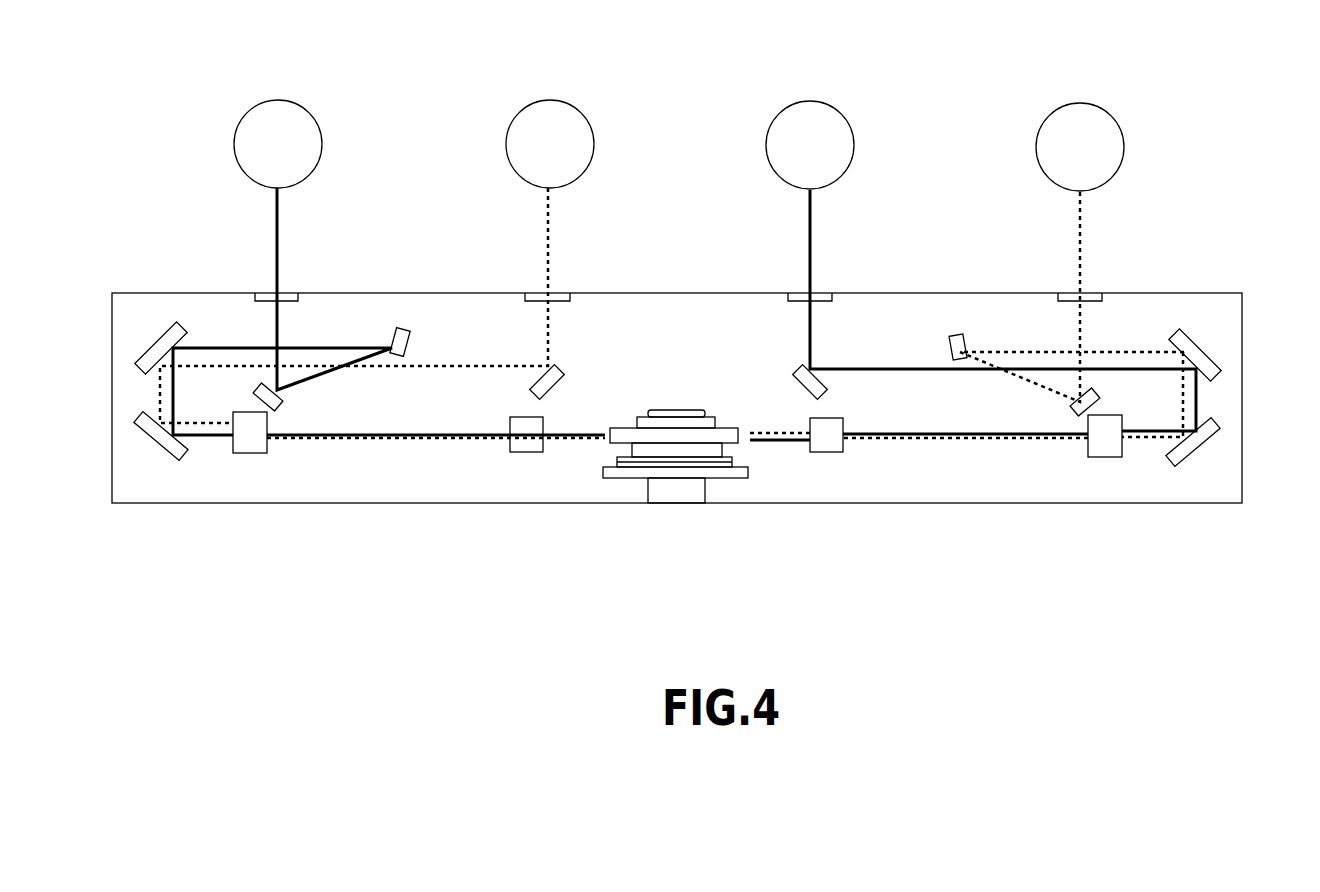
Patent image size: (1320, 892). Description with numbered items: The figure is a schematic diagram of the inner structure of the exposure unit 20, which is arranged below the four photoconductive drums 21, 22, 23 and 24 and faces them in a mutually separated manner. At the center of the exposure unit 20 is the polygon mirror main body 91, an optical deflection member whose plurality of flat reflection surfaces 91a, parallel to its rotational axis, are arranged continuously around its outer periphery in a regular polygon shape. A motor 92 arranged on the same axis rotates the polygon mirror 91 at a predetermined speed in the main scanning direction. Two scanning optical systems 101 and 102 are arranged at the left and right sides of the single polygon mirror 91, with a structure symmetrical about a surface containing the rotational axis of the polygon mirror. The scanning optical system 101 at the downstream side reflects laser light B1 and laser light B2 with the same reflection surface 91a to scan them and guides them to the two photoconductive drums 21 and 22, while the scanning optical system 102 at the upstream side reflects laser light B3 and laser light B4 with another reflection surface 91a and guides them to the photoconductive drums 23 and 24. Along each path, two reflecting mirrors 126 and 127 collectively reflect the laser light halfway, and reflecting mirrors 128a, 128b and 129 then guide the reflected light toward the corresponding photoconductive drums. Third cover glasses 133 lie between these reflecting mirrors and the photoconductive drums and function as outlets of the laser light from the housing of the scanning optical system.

The exposure unit 20 is at (1210, 292).
The photoconductive drum 21 is at (283, 98).
The photoconductive drum 22 is at (557, 98).
The photoconductive drum 23 is at (811, 99).
The photoconductive drum 24 is at (1082, 101).
The laser light B1 is at (282, 232).
The laser light B2 is at (553, 233).
The laser light B3 is at (815, 232).
The laser light B4 is at (1083, 238).
The third cover glass 133 is at (267, 290).
The reflecting mirror 127 is at (150, 343).
The reflecting mirror 126 is at (150, 440).
The reflecting mirror 129 is at (558, 367).
The reflecting mirror 128a is at (412, 337).
The reflecting mirror 128b is at (287, 397).
The scanning optical system 101 is at (293, 468).
The scanning optical system 102 is at (1057, 468).
The polygon mirror main body 91 is at (622, 427).
The reflection surface 91a is at (667, 423).
The motor 92 is at (625, 448).